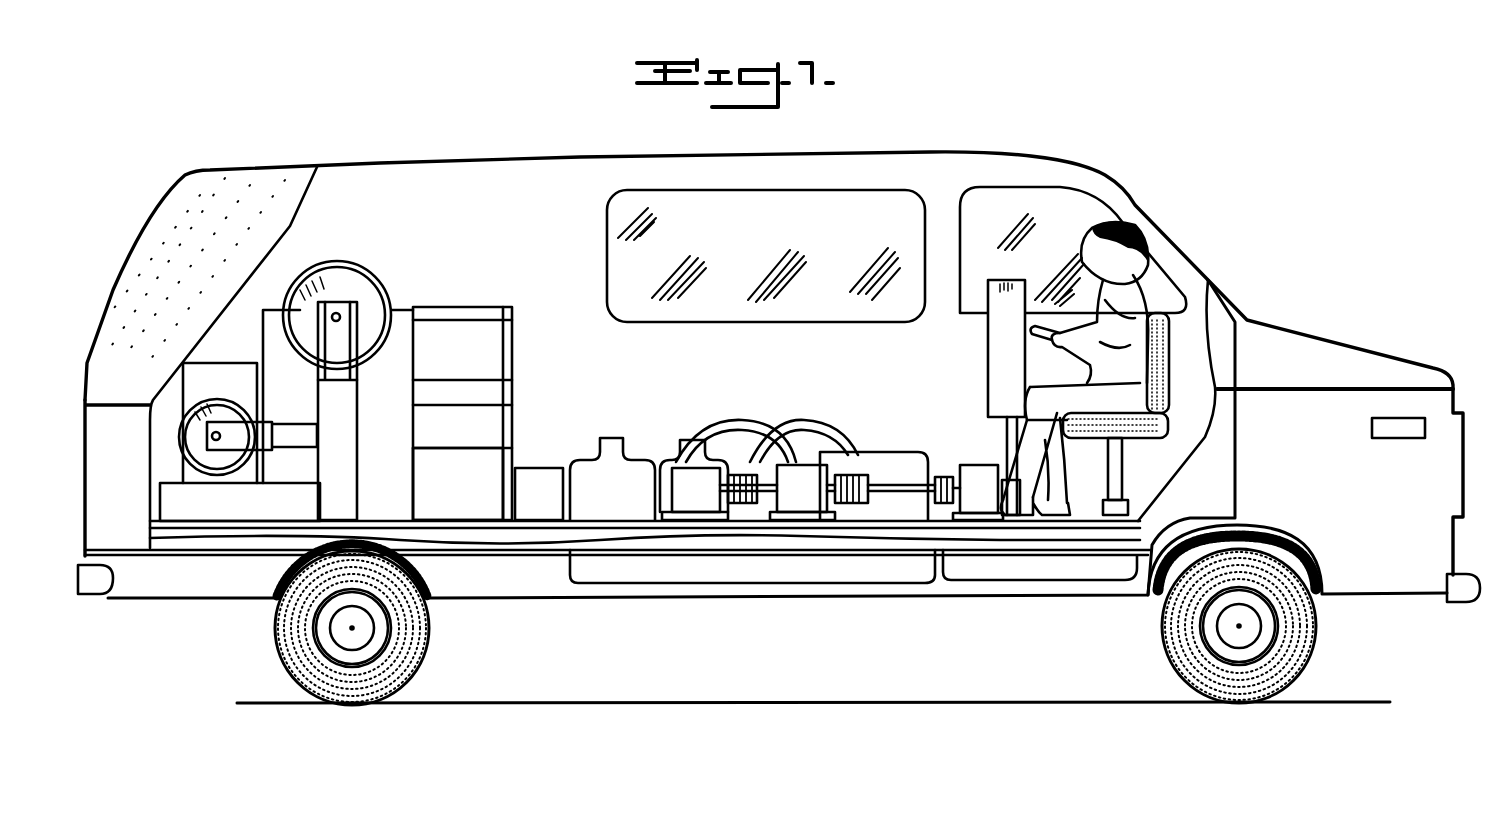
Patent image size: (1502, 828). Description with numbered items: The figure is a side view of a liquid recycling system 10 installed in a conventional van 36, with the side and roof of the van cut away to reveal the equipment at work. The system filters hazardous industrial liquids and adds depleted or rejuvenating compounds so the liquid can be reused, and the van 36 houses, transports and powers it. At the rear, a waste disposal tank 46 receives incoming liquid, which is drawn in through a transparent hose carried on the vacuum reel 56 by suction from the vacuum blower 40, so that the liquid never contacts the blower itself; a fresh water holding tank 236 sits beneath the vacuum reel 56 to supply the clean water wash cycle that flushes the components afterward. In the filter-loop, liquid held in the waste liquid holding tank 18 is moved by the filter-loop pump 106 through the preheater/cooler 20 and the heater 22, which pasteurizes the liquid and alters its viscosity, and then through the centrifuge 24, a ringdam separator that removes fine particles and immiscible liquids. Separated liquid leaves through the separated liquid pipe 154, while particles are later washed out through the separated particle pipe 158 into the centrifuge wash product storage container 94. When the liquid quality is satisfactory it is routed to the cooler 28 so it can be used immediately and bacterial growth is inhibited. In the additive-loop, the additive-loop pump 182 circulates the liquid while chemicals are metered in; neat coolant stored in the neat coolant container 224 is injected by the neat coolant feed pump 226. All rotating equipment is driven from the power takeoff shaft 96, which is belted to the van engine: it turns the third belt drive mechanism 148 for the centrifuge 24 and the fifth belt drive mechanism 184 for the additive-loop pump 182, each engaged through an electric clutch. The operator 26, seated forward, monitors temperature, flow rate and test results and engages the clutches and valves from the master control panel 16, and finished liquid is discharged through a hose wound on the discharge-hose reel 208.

The liquid recycling system 10 is at (975, 111).
The master control panel 16 is at (1003, 353).
The waste liquid holding tank 18 is at (396, 307).
The preheater/cooler 20 is at (483, 412).
The heater 22 is at (485, 352).
The centrifuge 24 is at (898, 452).
The operator 26 is at (1152, 290).
The cooler 28 is at (465, 488).
The van 36 is at (1343, 291).
The vacuum blower 40 is at (993, 499).
The waste disposal tank 46 is at (217, 376).
The vacuum reel 56 is at (357, 284).
The centrifuge wash product storage container 94 is at (685, 445).
The power takeoff shaft 96 is at (912, 488).
The filter-loop pump 106 is at (686, 480).
The third belt drive mechanism 148 is at (943, 504).
The separated liquid pipe 154 is at (798, 428).
The separated particle pipe 158 is at (744, 427).
The additive-loop pump 182 is at (822, 500).
The fifth belt drive mechanism 184 is at (868, 474).
The discharge-hose reel 208 is at (200, 452).
The neat coolant container 224 is at (642, 499).
The neat coolant feed pump 226 is at (548, 452).
The fresh water holding tank 236 is at (255, 512).